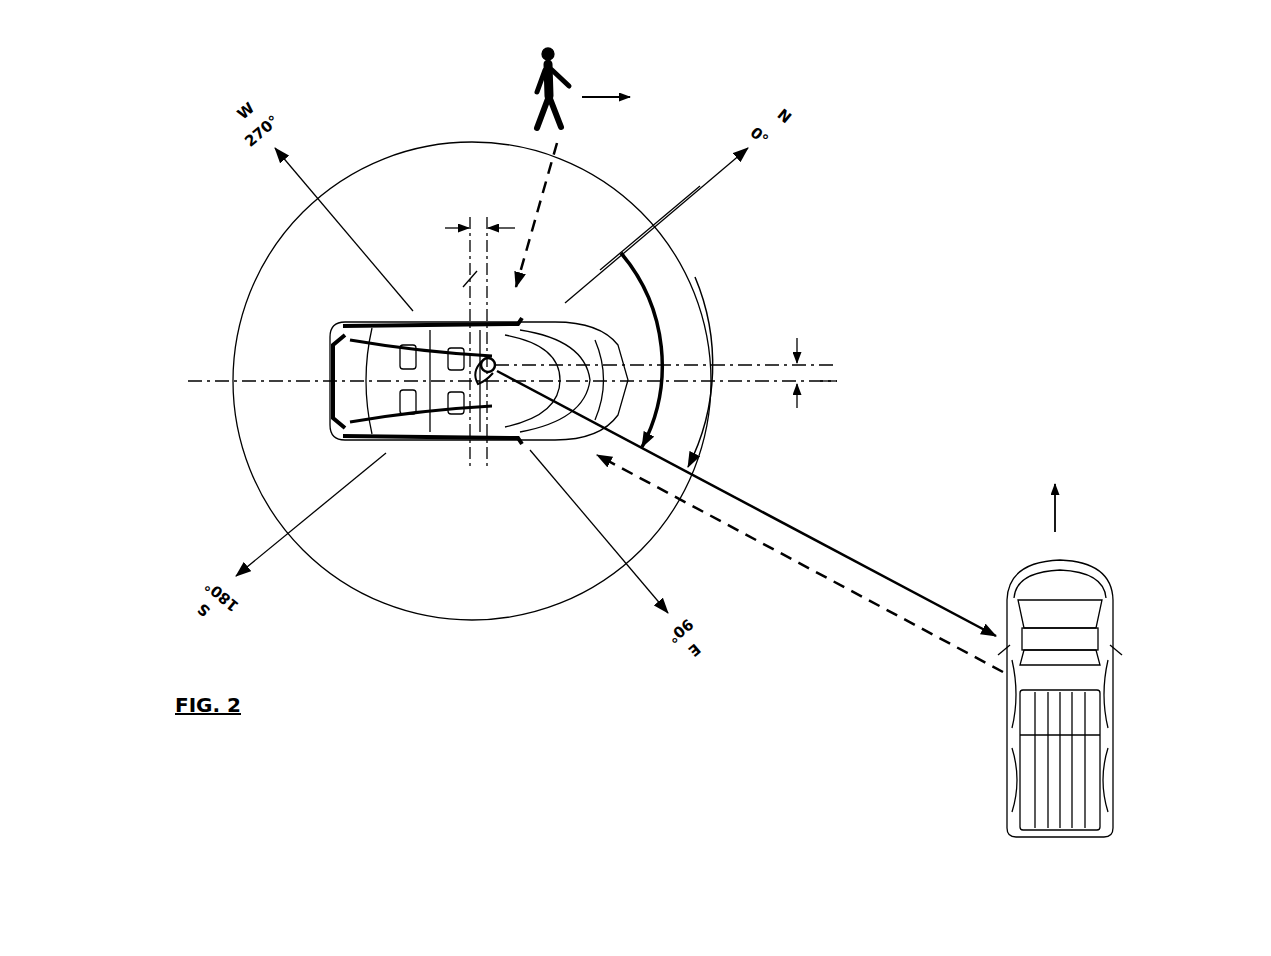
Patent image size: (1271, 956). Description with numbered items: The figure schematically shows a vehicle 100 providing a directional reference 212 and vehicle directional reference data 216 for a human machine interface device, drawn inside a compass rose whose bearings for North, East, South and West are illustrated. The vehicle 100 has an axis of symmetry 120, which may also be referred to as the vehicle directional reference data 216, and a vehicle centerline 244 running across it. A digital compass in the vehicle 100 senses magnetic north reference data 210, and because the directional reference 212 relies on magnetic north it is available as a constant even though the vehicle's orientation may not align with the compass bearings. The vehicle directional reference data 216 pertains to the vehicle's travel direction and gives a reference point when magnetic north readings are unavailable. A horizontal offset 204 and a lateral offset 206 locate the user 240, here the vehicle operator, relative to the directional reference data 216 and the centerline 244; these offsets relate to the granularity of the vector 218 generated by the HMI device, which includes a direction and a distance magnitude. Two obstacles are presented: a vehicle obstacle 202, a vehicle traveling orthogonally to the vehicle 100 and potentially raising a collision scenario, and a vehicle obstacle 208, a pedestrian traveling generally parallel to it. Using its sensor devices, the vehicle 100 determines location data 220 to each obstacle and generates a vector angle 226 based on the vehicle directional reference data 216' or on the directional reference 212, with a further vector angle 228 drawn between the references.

The vehicle 100 is at (317, 375).
The axis of symmetry 120 is at (200, 381).
The vehicle obstacle 202 is at (1113, 593).
The horizontal offset 204 is at (437, 222).
The lateral offset 206 is at (798, 348).
The vehicle obstacle 208 is at (522, 62).
The magnetic north reference data 210 is at (887, 75).
The directional reference 212 is at (692, 193).
The vehicle directional reference data 216 is at (918, 420).
The vehicle directional reference data 216' is at (718, 319).
The vector 218 is at (800, 532).
The location data 220 is at (795, 582).
The vector angle 226 is at (710, 434).
The vector angle 228 is at (633, 270).
The user 240 is at (496, 336).
The vehicle centerline 244 is at (468, 462).